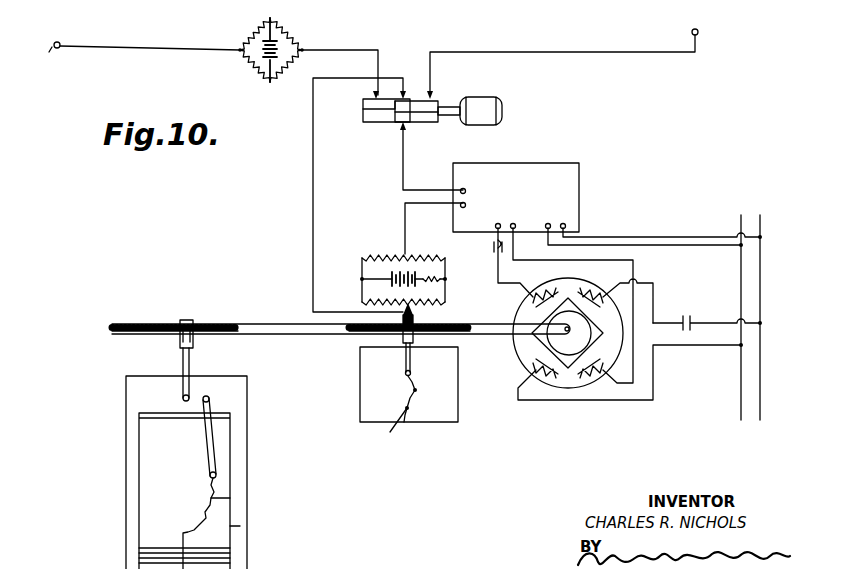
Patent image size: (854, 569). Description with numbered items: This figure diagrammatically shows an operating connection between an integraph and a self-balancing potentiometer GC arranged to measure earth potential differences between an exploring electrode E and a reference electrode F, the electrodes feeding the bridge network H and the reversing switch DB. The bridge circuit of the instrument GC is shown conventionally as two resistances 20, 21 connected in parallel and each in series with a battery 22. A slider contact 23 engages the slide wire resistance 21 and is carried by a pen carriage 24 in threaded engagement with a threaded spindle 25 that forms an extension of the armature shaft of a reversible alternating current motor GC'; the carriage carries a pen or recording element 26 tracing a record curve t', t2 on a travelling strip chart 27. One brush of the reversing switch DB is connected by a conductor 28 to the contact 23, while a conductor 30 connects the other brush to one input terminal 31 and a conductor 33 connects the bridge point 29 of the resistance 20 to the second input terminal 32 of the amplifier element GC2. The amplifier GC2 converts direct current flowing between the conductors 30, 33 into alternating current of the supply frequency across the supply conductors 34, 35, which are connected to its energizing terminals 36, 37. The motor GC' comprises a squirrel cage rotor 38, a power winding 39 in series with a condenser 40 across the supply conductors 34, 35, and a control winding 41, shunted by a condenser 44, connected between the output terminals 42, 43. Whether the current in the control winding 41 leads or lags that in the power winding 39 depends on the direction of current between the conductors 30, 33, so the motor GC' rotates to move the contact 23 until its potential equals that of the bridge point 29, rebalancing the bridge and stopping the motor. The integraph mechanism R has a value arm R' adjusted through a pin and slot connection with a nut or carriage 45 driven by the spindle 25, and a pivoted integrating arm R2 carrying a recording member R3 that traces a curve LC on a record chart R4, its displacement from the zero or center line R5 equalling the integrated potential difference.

The reference electrode F is at (60, 43).
The bridge network H is at (296, 36).
The exploring electrode E is at (698, 30).
The reversing switch DB is at (378, 123).
The conductor 28 is at (313, 165).
The conductor 30 is at (403, 165).
The amplifier element GC2 is at (553, 163).
The self-balancing potentiometer GC is at (655, 224).
The input terminal 31 is at (466, 191).
The second input terminal 32 is at (465, 208).
The output terminal 42 is at (499, 223).
The output terminal 43 is at (513, 223).
The amplifier energizing terminal 37 is at (548, 223).
The amplifier energizing terminal 36 is at (563, 223).
The conductor 33 is at (405, 210).
The resistance 20 is at (392, 256).
The bridge point 29 is at (407, 254).
The battery 22 is at (392, 272).
The resistance 21 is at (378, 300).
The slider contact 23 is at (416, 312).
The pen carriage 24 is at (416, 323).
The condenser 44 is at (495, 262).
The power winding 39 is at (590, 300).
The control winding 41 is at (556, 290).
The condenser 40 is at (683, 318).
The alternating current supply conductor 35 is at (741, 278).
The alternating current supply conductor 34 is at (762, 282).
The reversible alternating current motor GC' is at (550, 341).
The squirrel cage type rotor 38 is at (560, 333).
The threaded spindle 25 is at (331, 336).
The nut or carriage 45 is at (190, 321).
The measuring or value arm R' is at (205, 374).
The integraph mechanism R is at (201, 472).
The pivoted integrating arm R2 is at (216, 438).
The recording member R3 is at (216, 477).
The curve LC is at (230, 498).
The record chart R4 is at (240, 526).
The zero or center line R5 is at (200, 553).
The recording element 26 is at (405, 363).
The record curve t2 is at (414, 391).
The record curve t' is at (393, 429).
The travelling strip chart 27 is at (440, 420).